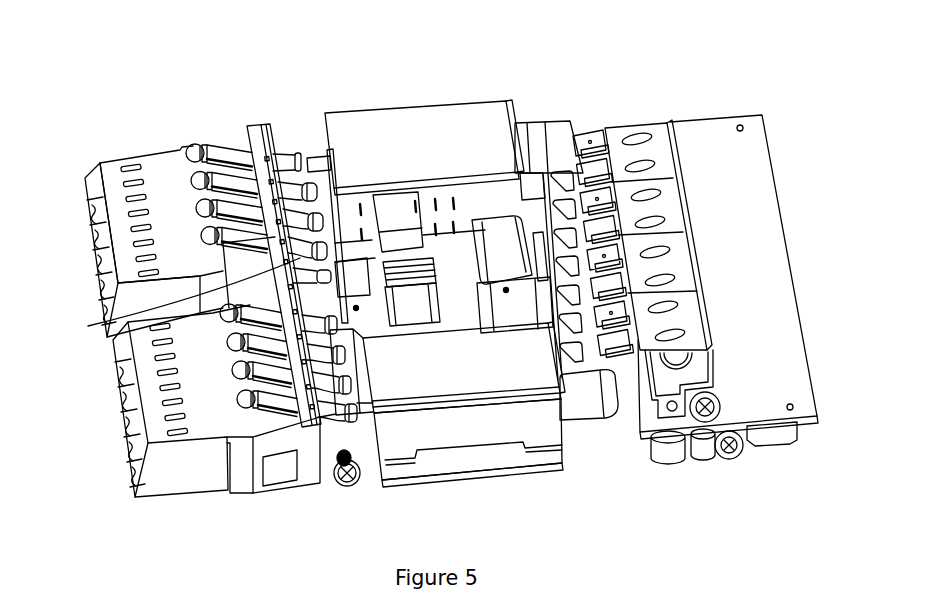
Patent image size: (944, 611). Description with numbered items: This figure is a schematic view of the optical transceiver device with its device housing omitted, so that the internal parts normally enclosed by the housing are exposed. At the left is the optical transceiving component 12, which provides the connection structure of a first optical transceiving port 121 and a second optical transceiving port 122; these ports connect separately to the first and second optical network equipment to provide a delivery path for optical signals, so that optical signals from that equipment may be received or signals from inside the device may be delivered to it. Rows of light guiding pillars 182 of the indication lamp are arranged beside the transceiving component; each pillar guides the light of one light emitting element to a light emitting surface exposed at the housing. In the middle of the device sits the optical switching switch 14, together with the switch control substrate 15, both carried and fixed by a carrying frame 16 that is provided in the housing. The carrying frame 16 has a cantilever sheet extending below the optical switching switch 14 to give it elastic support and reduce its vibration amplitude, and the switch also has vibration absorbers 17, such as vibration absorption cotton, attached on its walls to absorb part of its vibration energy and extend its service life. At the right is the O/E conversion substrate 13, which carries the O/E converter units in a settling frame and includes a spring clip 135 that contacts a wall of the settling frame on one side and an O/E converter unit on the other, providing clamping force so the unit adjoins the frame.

The optical transceiving component 12 is at (169, 186).
The O/E conversion substrate 13 is at (757, 221).
The optical switching switch 14 is at (532, 140).
The switch control substrate 15 is at (453, 310).
The carrying frame 16 is at (510, 455).
The vibration absorbers 17 is at (422, 131).
The first optical transceiving port 121 is at (286, 157).
The second optical transceiving port 122 is at (165, 303).
The spring clip 135 is at (658, 135).
The light guiding pillars 182 is at (222, 146).